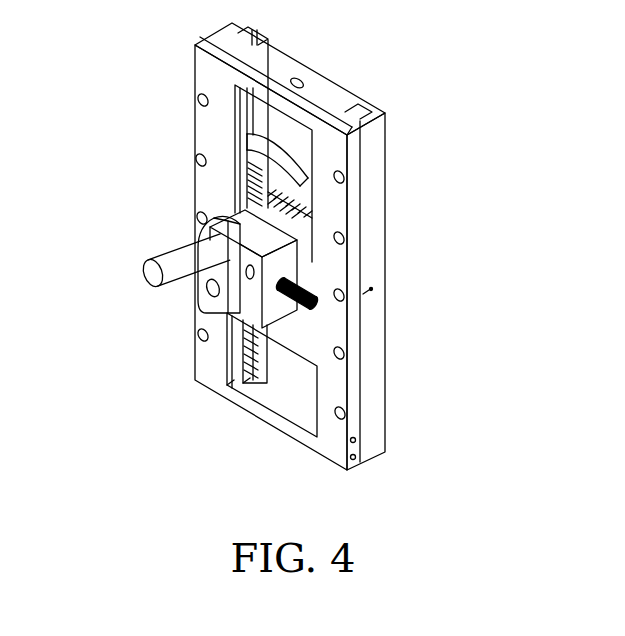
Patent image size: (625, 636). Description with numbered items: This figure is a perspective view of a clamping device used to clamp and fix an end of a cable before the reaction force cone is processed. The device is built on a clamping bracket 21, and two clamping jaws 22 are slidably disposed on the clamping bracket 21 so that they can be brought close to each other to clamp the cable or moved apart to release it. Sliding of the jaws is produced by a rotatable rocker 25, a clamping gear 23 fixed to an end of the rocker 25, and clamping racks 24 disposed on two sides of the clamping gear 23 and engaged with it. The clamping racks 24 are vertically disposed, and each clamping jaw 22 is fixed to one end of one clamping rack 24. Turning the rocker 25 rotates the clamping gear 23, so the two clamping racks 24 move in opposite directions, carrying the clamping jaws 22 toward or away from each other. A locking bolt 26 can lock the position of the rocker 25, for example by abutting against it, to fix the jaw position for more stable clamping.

The clamping bracket 21 is at (208, 135).
The clamping jaw 22 is at (270, 153).
The clamping gear 23 is at (290, 222).
The clamping rack 24 is at (243, 175).
The rocker 25 is at (155, 292).
The locking bolt 26 is at (310, 290).